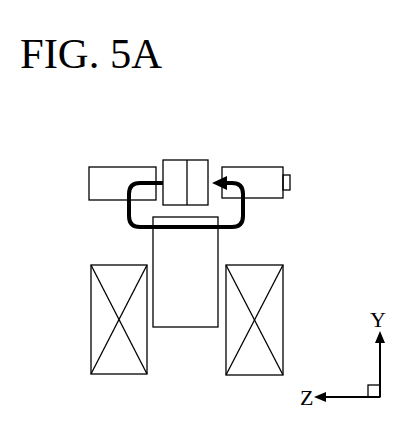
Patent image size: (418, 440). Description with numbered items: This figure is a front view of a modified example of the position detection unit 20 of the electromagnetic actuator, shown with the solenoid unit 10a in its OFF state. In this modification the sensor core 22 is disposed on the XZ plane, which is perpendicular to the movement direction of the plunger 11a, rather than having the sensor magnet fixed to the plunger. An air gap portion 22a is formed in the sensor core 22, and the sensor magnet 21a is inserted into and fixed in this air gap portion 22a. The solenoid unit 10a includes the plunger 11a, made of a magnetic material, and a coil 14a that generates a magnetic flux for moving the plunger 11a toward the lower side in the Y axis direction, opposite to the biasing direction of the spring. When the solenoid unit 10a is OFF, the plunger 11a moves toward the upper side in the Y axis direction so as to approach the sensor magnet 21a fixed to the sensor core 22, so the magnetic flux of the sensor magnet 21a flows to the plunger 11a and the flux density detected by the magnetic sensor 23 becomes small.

The position detection unit 20 is at (103, 155).
The air gap portion 22a is at (156, 178).
The sensor magnet 21a is at (196, 160).
The sensor core 22 is at (254, 166).
The magnetic sensor 23 is at (290, 182).
The solenoid unit 10a is at (163, 294).
The plunger 11a is at (207, 243).
The coil 14a is at (100, 307).